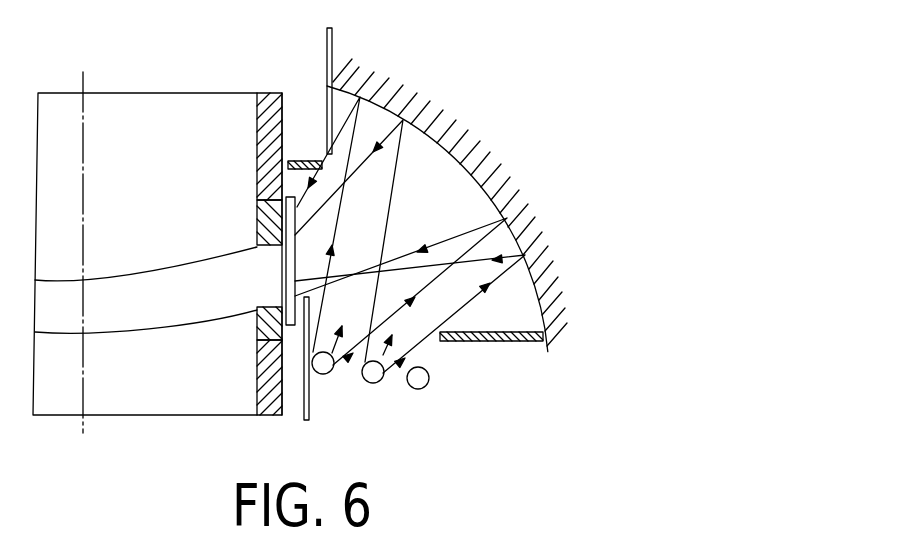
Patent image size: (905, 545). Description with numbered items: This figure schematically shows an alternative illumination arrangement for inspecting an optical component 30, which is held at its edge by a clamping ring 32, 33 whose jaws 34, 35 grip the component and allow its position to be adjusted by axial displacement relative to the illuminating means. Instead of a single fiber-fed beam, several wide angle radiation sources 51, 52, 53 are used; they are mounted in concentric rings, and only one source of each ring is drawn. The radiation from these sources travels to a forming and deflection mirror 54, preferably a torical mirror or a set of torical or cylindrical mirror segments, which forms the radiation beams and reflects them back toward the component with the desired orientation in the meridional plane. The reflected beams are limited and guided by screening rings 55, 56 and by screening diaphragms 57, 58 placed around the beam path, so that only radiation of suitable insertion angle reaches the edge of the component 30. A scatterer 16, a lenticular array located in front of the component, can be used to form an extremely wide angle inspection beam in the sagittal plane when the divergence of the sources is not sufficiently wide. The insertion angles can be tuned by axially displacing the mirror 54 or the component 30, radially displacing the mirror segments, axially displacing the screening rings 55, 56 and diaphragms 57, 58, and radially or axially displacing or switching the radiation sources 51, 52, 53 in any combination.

The scatterer 16 is at (283, 272).
The component to be inspected 30 is at (106, 298).
The clamping ring 32 is at (262, 383).
The clamping ring 33 is at (257, 157).
The jaw 34 is at (260, 320).
The jaw 35 is at (257, 222).
The wide angle radiation source 51 is at (330, 376).
The wide angle radiation source 52 is at (378, 383).
The wide angle radiation source 53 is at (420, 390).
The forming and deflection mirror 54 is at (478, 162).
The screening ring 55 is at (335, 50).
The screening ring 56 is at (303, 416).
The screening diaphragm 57 is at (498, 343).
The screening diaphragm 58 is at (305, 161).